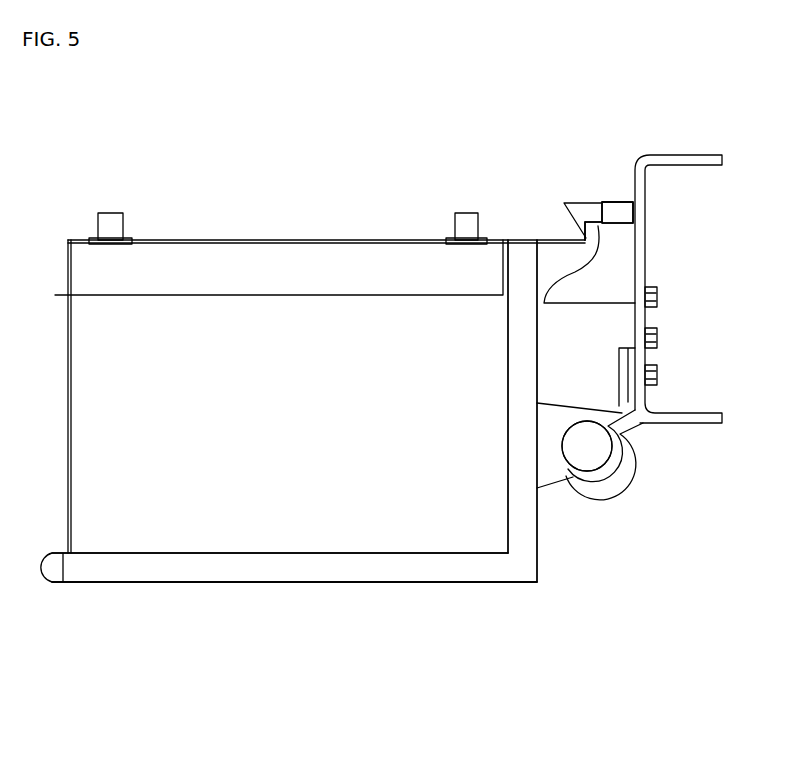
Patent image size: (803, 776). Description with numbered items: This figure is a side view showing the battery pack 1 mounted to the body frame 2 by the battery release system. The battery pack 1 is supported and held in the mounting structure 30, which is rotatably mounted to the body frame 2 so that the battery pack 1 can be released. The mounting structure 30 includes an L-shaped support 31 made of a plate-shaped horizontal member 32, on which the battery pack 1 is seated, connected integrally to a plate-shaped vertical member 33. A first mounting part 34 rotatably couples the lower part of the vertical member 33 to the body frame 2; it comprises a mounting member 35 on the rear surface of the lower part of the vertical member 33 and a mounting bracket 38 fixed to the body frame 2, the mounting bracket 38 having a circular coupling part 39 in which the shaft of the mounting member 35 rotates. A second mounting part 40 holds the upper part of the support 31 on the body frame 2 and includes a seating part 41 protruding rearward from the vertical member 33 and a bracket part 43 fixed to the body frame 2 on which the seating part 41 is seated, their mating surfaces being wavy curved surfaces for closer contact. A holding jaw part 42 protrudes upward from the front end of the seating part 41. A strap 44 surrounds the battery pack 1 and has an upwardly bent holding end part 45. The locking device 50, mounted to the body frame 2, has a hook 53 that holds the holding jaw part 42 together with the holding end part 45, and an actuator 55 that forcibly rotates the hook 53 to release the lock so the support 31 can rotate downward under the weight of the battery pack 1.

The battery pack 1 is at (308, 518).
The body frame 2 is at (648, 266).
The mounting structure 30 is at (166, 583).
The support 31 is at (555, 663).
The horizontal member 32 is at (462, 583).
The vertical member 33 is at (538, 533).
The first mounting part 34 is at (611, 478).
The mounting member 35 is at (568, 408).
The mounting bracket 38 is at (587, 446).
The circular coupling part 39 is at (618, 467).
The second mounting part 40 is at (578, 309).
The seating part 41 is at (555, 258).
The holding jaw part 42 is at (598, 232).
The bracket part 43 is at (607, 284).
The strap 44 is at (233, 240).
The holding end part 45 is at (590, 210).
The locking device 50 is at (615, 192).
The hook 53 is at (573, 212).
The actuator 55 is at (618, 213).